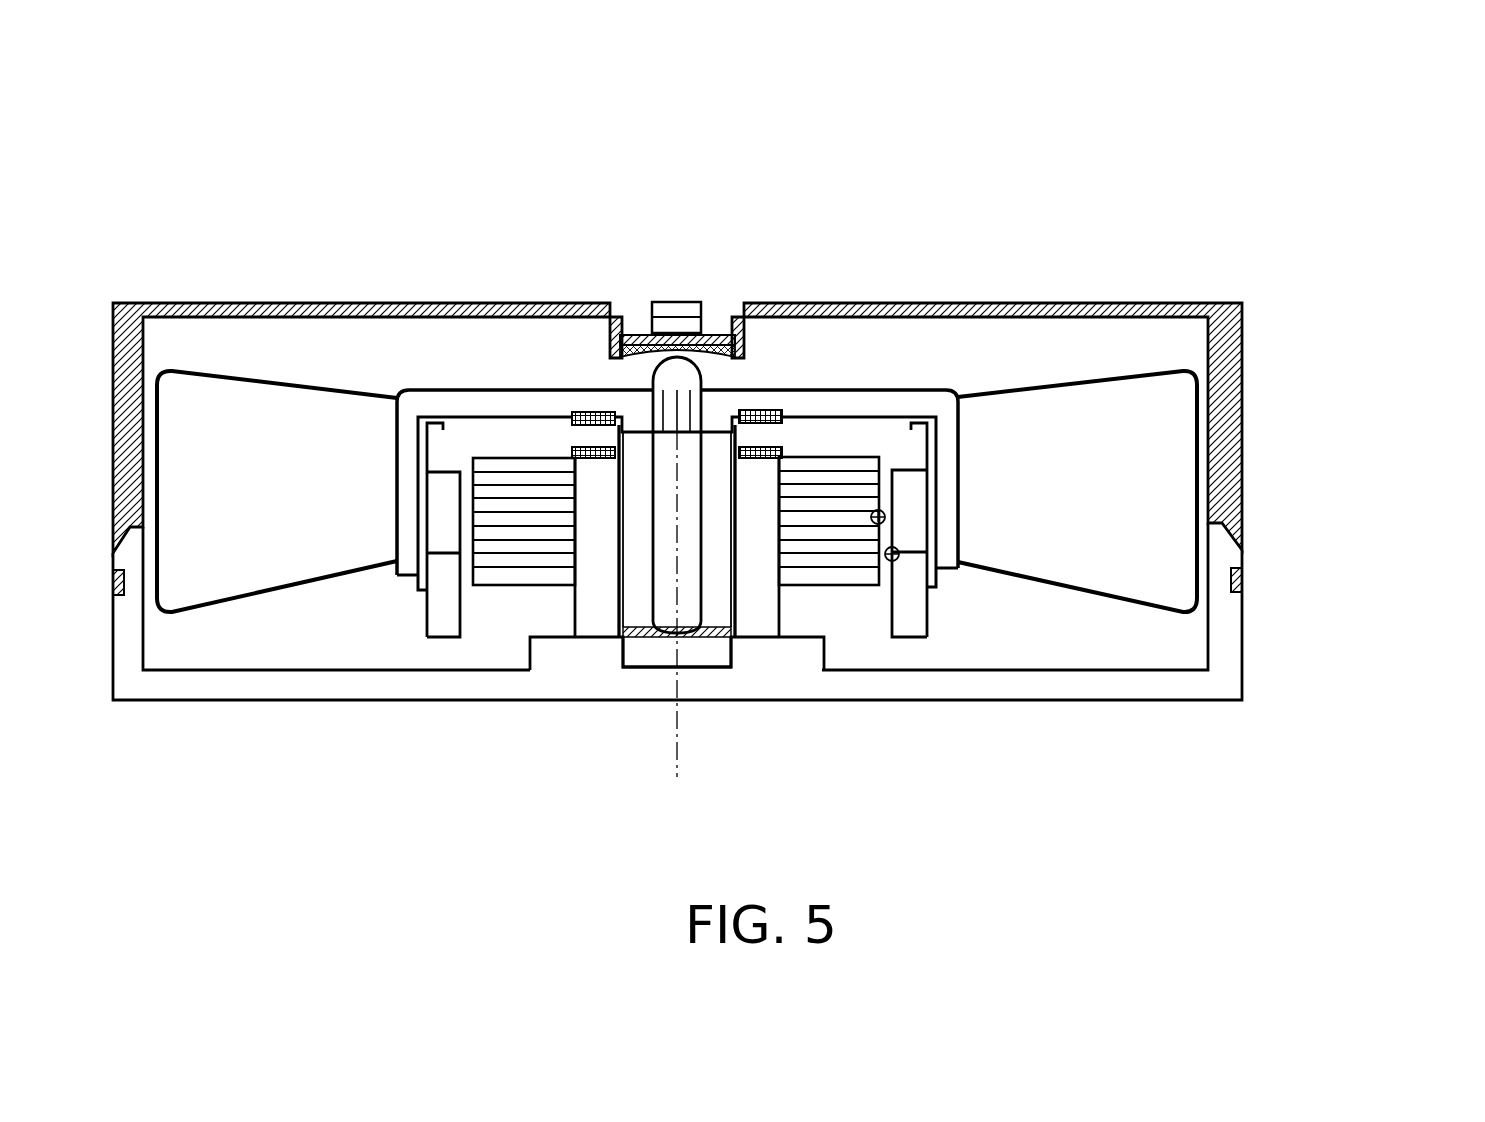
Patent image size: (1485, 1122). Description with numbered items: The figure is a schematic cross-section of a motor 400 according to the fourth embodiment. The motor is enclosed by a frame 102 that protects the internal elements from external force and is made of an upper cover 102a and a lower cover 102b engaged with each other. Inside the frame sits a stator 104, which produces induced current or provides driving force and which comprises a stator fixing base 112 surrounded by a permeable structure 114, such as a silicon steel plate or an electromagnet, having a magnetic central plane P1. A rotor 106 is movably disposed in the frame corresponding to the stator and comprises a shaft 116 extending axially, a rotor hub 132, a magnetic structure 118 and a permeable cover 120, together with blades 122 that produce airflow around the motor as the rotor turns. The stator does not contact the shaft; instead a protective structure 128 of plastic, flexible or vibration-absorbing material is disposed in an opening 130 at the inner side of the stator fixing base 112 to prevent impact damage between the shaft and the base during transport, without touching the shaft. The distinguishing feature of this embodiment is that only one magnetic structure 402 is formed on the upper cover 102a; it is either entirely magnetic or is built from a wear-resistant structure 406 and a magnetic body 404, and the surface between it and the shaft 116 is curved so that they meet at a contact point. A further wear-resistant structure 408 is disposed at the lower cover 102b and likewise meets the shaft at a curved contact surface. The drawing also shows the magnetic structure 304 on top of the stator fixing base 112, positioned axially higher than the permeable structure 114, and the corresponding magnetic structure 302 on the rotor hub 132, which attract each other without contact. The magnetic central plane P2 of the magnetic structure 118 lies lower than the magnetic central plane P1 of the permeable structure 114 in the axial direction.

The motor 400 is at (791, 454).
The frame 102 is at (791, 501).
The upper cover 102a is at (1243, 507).
The lower cover 102b is at (1243, 627).
The stator 104 is at (658, 638).
The stator fixing base 112 is at (593, 613).
The permeable structure 114 is at (488, 570).
The rotor 106 is at (677, 368).
The rotor hub 132 is at (840, 403).
The permeable cover 120 is at (917, 423).
The magnetic structure 118 is at (907, 483).
The blades 122 is at (793, 145).
The shaft 116 is at (692, 375).
The magnetic structure 402 is at (631, 207).
The magnetic body 404 is at (662, 303).
The wear-resistant structure 406 is at (633, 333).
The wear-resistant structure 408 is at (717, 660).
The magnetic structure 302 is at (572, 412).
The magnetic structure 304 is at (572, 450).
The protective structure 128 is at (617, 420).
The opening 130 is at (612, 543).
The magnetic central plane P1 is at (893, 505).
The magnetic central plane P2 is at (903, 566).